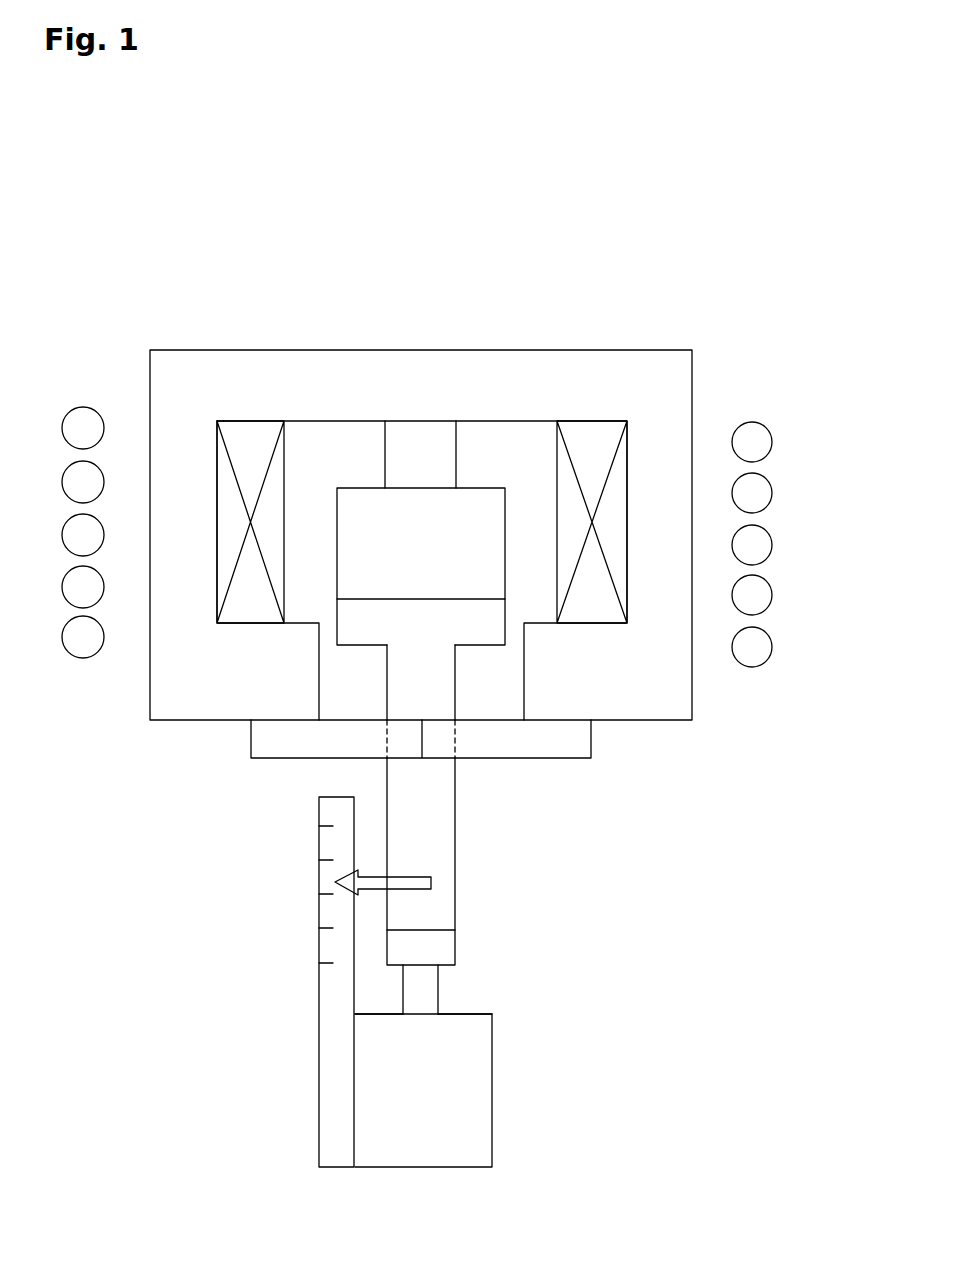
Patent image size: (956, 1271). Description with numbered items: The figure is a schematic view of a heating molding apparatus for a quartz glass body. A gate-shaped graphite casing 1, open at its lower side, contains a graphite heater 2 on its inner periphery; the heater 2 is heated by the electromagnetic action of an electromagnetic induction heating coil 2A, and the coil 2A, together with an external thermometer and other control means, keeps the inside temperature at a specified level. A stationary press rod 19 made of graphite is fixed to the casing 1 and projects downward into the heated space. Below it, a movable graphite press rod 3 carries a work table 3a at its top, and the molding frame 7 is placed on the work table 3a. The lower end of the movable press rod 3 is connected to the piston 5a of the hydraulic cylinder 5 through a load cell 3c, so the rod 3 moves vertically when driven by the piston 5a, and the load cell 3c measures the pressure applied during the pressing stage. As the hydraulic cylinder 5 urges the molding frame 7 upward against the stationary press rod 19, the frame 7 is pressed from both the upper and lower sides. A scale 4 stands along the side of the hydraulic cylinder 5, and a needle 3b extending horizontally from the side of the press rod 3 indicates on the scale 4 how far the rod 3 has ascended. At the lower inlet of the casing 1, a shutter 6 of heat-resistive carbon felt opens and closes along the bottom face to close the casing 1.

The graphite casing 1 is at (648, 366).
The graphite heater 2 is at (224, 473).
The electromagnetic induction heating coil 2A is at (79, 658).
The stationary press rod 19 is at (421, 440).
The molding frame 7 is at (338, 522).
The movable press rod 3 is at (440, 851).
The work table 3a is at (483, 633).
The needle 3b is at (418, 888).
The load cell 3c is at (442, 953).
The shutter 6 is at (565, 750).
The scale 4 is at (333, 827).
The hydraulic cylinder 5 is at (380, 1085).
The piston 5a is at (420, 993).